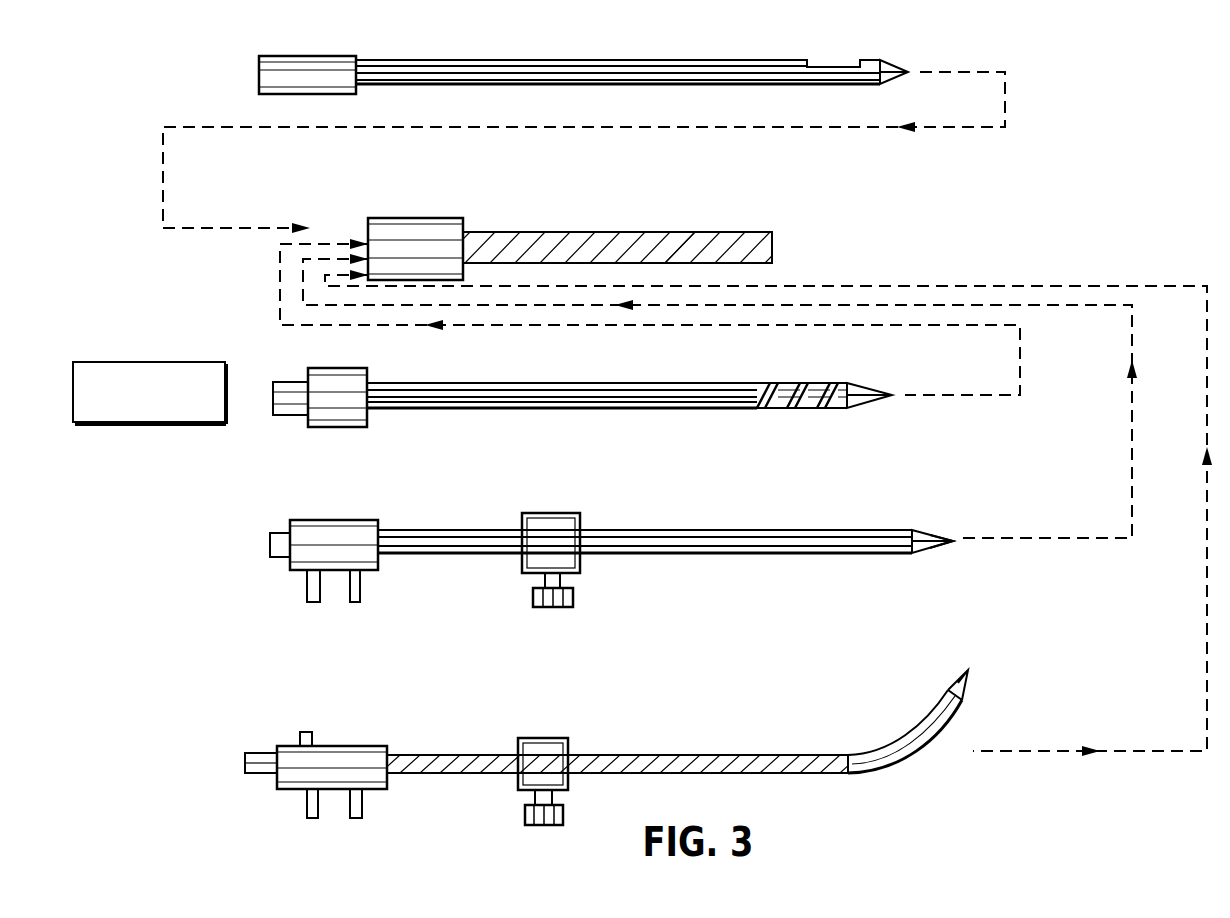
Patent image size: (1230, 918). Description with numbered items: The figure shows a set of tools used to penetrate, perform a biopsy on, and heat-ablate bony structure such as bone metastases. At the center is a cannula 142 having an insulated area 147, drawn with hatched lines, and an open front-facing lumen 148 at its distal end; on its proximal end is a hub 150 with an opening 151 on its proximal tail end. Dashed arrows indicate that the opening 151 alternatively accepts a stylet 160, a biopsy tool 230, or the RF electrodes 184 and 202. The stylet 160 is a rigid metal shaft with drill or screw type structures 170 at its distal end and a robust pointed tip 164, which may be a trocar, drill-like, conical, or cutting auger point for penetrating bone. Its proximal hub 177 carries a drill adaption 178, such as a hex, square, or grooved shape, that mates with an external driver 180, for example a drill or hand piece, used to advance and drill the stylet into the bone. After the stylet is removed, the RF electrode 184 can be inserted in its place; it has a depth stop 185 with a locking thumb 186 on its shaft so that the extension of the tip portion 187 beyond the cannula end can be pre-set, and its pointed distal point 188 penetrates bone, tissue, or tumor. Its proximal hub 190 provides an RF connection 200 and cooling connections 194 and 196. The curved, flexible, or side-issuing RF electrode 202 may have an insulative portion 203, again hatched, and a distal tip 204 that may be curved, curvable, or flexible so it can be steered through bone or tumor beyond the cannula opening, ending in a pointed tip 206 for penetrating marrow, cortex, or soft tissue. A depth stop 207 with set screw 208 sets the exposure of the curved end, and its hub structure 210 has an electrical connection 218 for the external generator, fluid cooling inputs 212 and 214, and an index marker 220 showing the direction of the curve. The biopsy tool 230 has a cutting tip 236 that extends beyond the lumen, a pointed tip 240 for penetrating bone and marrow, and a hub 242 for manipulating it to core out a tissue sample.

The cannula 142 is at (587, 232).
The insulated area 147 is at (683, 242).
The open front-facing lumen 148 is at (772, 250).
The hub 150 is at (418, 218).
The opening 151 is at (368, 240).
The stylet 160 is at (632, 398).
The pointed tip 164 is at (872, 400).
The drill or screw type structures 170 is at (790, 408).
The hub 177 is at (345, 427).
The drill adaption 178 is at (290, 415).
The driver 180 is at (148, 422).
The RF electrode 184 is at (790, 553).
The depth stop 185 is at (553, 513).
The locking thumb 186 is at (575, 598).
The tip portion 187 is at (900, 553).
The dilator distal point 188 is at (950, 543).
The proximal hub 190 is at (370, 558).
The cooling connection 194 is at (355, 602).
The cooling connection 196 is at (312, 602).
The RF connection 200 is at (275, 542).
The curved RF electrode 202 is at (745, 773).
The insulative portion 203 is at (688, 755).
The distal tip 204 is at (918, 745).
The pointed tip 206 is at (968, 680).
The depth stop 207 is at (568, 783).
The set screw 208 is at (545, 825).
The hub structure 210 is at (387, 790).
The fluid cooling input 212 is at (312, 818).
The fluid cooling input 214 is at (356, 818).
The electrical connection 218 is at (245, 765).
The index marker 220 is at (306, 732).
The biopsy tool 230 is at (600, 60).
The cutting tip 236 is at (850, 65).
The pointed tip 240 is at (897, 68).
The hub 242 is at (320, 56).